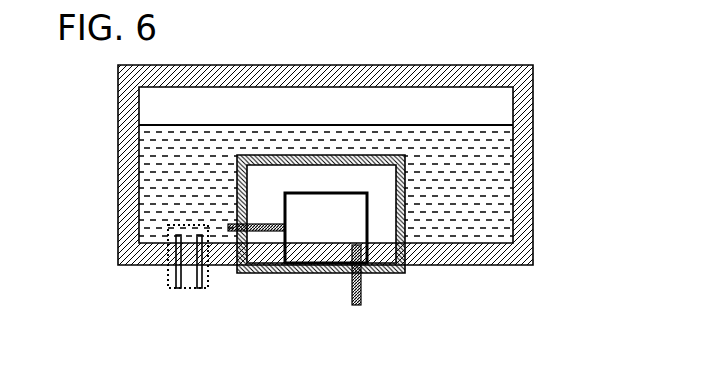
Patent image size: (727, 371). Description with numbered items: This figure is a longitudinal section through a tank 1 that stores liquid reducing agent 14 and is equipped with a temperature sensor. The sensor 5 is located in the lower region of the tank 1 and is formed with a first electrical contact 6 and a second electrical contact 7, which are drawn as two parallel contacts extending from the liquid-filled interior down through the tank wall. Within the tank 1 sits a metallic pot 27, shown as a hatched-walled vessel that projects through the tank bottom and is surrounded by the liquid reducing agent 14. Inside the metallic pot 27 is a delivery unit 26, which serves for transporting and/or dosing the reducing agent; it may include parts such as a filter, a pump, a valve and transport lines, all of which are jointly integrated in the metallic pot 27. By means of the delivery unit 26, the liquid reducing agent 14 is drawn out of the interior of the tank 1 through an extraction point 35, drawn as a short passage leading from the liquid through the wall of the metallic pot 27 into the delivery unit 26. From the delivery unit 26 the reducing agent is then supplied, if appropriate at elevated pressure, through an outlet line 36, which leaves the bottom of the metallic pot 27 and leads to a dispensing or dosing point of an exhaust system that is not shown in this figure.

The tank 1 is at (549, 69).
The liquid reducing agent 14 is at (492, 148).
The metallic pot 27 is at (407, 213).
The delivery unit 26 is at (305, 233).
The extraction point 35 is at (257, 224).
The outlet line 36 is at (361, 292).
The sensor 5 is at (210, 282).
The first electrical contact 6 is at (199, 288).
The second electrical contact 7 is at (176, 288).